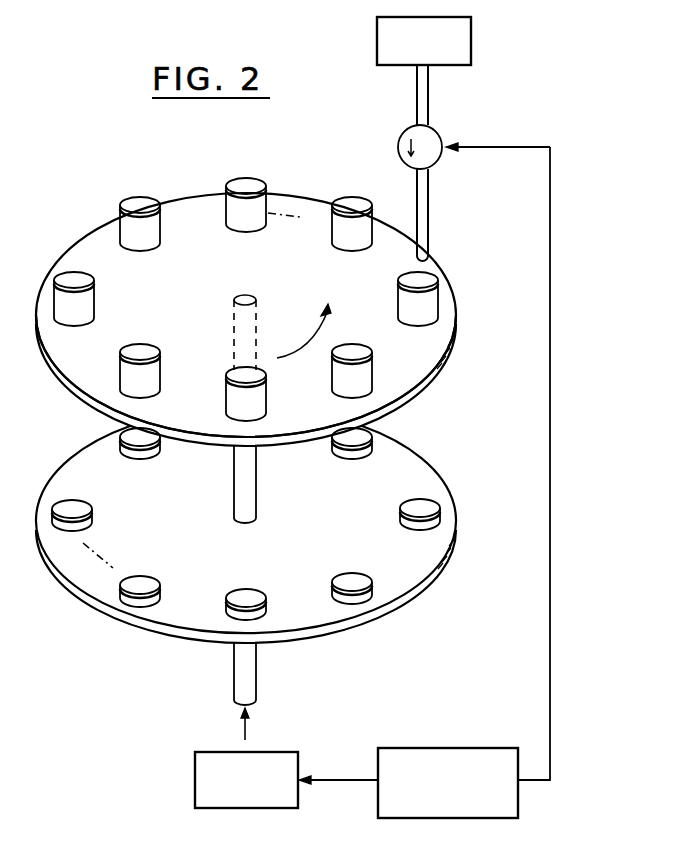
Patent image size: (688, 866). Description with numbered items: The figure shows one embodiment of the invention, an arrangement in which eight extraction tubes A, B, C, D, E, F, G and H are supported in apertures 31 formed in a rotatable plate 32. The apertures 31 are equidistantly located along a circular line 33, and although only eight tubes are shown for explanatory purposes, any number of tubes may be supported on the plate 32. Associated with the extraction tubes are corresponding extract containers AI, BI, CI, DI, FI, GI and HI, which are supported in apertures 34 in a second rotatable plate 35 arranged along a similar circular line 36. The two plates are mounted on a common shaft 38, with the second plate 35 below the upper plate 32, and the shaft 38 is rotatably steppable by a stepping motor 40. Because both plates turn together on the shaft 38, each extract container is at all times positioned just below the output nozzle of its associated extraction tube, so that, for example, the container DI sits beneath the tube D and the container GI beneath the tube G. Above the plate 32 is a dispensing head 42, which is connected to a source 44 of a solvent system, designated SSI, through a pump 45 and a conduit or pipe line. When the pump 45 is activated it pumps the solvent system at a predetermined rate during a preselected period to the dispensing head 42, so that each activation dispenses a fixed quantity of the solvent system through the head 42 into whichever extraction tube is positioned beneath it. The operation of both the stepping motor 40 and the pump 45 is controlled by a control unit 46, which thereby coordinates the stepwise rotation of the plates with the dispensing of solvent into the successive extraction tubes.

The apertures 31 is at (368, 390).
The rotatable plate 32 is at (450, 352).
The circular line 33 is at (306, 220).
The apertures 34 is at (352, 610).
The second rotatable plate 35 is at (412, 598).
The circular line 36 is at (60, 558).
The shaft 38 is at (252, 507).
The stepping motor 40 is at (194, 786).
The dispensing head 42 is at (428, 250).
The source of solvent system 44 is at (476, 58).
The pump 45 is at (440, 134).
The control unit 46 is at (429, 182).
The extraction tube A is at (232, 392).
The extraction tube B is at (132, 369).
The extraction tube C is at (68, 278).
The extraction tube D is at (133, 204).
The extraction tube E is at (246, 182).
The extraction tube F is at (356, 203).
The extraction tube G is at (438, 289).
The extraction tube H is at (338, 383).
The extract container AI is at (228, 622).
The extract container BI is at (118, 600).
The extract container CI is at (50, 512).
The extract container DI is at (118, 434).
The extract container FI is at (372, 446).
The extract container GI is at (441, 515).
The extract container HI is at (368, 600).